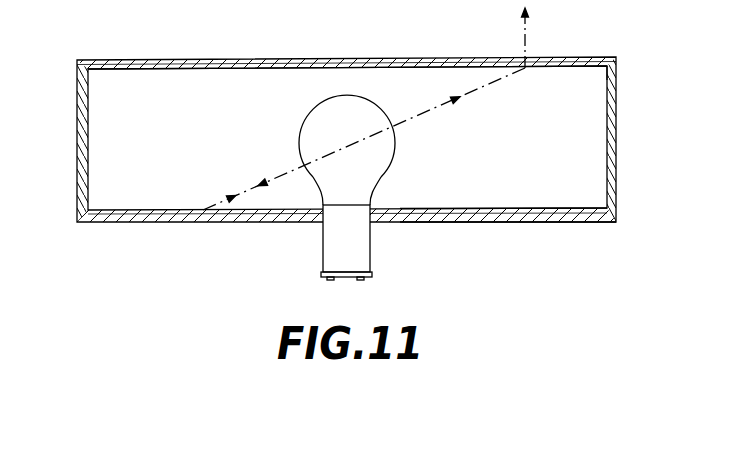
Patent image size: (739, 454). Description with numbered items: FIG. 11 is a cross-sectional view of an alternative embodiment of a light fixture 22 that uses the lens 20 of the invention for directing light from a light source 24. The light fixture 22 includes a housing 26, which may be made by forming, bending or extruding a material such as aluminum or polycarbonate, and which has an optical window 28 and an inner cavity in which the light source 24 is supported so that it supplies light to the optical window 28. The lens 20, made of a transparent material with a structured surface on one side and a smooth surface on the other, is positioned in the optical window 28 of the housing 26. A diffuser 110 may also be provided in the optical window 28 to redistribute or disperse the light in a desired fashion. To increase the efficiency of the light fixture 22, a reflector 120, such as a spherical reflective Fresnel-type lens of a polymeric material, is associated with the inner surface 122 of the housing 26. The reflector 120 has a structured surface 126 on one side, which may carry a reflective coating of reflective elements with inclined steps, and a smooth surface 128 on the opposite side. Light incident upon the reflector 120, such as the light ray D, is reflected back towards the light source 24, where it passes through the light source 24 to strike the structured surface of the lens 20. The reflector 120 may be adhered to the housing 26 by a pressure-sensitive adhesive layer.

The light fixture 22 is at (72, 128).
The diffuser 110 is at (135, 60).
The lens 20 is at (197, 70).
The inner surface 122 is at (85, 166).
The housing 26 is at (615, 122).
The optical window 28 is at (604, 73).
The reflector 120 is at (144, 210).
The smooth surface 128 is at (520, 207).
The structured surface 126 is at (504, 221).
The light source 24 is at (397, 147).
The light ray D is at (280, 171).